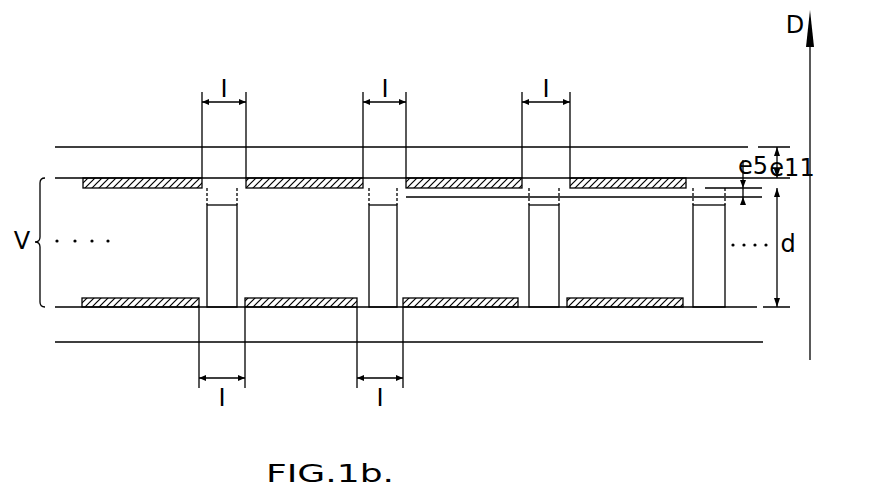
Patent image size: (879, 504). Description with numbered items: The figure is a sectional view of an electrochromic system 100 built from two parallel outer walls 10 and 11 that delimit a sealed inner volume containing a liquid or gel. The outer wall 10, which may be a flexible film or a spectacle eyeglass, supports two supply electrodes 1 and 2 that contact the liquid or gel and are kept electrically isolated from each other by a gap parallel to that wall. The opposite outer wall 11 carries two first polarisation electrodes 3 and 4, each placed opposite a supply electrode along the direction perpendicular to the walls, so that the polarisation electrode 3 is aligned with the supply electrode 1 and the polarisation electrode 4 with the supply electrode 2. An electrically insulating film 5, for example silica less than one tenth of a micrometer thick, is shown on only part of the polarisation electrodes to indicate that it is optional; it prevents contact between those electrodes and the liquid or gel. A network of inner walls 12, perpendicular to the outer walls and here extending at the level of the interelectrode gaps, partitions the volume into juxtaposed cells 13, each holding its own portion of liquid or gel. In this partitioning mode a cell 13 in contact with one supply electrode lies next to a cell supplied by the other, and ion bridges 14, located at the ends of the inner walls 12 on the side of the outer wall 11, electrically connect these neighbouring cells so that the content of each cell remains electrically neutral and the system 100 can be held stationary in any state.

The electrochromic system 100 is at (97, 117).
The supply electrode 1 is at (107, 306).
The supply electrode 2 is at (272, 307).
The first polarisation electrode 3 is at (152, 182).
The first polarisation electrode 4 is at (325, 183).
The insulating film 5 is at (698, 192).
The outer wall 10 is at (685, 323).
The outer wall 11 is at (618, 165).
The inner wall 12 is at (220, 282).
The cell 13 is at (285, 245).
The ion bridge 14 is at (222, 192).